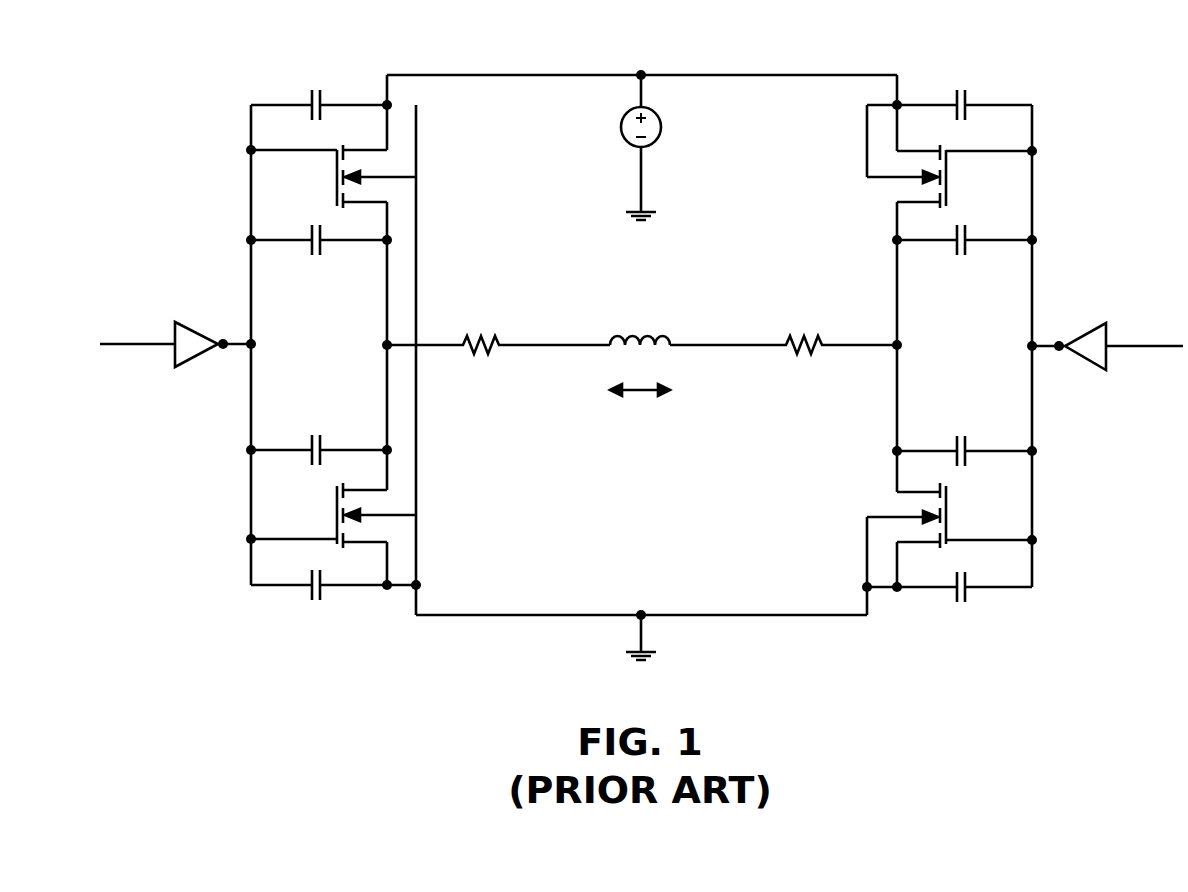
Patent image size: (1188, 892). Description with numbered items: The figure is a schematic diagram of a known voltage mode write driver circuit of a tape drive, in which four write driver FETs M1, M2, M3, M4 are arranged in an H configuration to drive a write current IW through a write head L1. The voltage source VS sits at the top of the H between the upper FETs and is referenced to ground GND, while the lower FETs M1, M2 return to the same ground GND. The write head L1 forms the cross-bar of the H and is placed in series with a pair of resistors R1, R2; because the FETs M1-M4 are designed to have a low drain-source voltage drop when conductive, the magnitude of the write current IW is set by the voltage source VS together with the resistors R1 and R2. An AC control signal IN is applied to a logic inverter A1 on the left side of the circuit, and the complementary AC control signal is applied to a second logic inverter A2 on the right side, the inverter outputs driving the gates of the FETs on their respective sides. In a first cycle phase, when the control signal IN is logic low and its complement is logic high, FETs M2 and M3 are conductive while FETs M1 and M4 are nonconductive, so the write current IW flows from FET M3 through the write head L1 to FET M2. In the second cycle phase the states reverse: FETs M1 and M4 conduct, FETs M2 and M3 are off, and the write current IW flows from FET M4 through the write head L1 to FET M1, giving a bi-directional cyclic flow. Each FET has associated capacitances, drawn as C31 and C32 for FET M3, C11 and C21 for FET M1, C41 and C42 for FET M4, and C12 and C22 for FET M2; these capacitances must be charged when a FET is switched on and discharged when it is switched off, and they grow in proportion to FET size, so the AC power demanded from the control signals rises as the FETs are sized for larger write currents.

The capacitance C31 is at (319, 94).
The capacitance C32 is at (319, 252).
The capacitance C11 is at (319, 439).
The capacitance C21 is at (333, 597).
The capacitance C41 is at (949, 94).
The capacitance C42 is at (964, 252).
The capacitance C12 is at (964, 440).
The capacitance C22 is at (949, 599).
The FET M1 is at (333, 515).
The FET M2 is at (949, 515).
The FET M3 is at (333, 176).
The FET M4 is at (949, 176).
The resistor R1 is at (480, 334).
The resistor R2 is at (803, 334).
The write head L1 is at (640, 329).
The write current IW is at (640, 380).
The voltage source VS is at (657, 143).
The ground GND is at (641, 448).
The logic inverter A1 is at (213, 354).
The logic inverter A2 is at (1069, 358).
The AC control signal IN is at (137, 324).